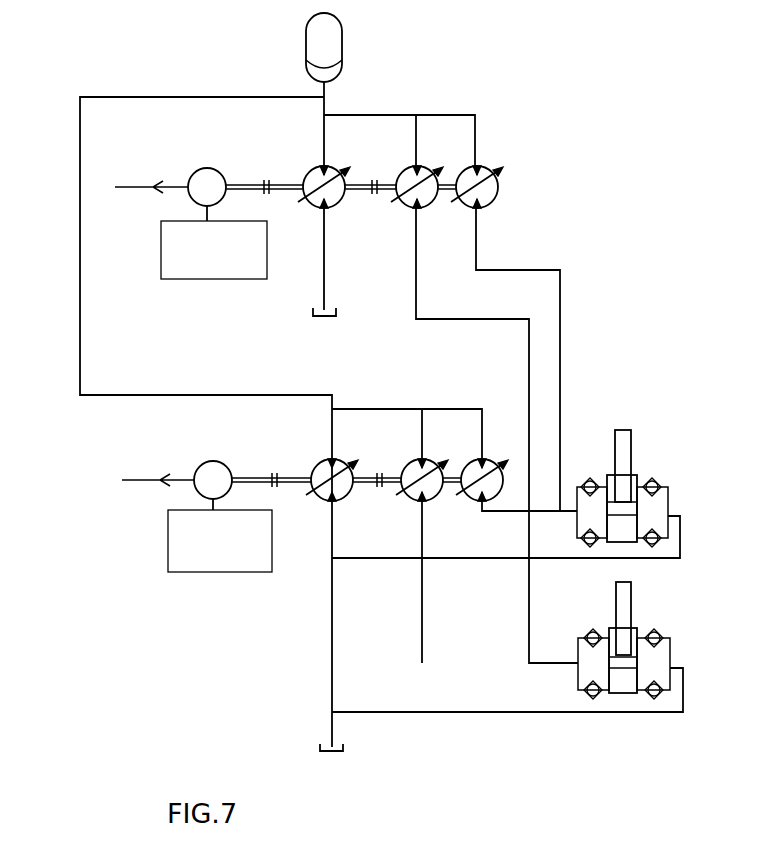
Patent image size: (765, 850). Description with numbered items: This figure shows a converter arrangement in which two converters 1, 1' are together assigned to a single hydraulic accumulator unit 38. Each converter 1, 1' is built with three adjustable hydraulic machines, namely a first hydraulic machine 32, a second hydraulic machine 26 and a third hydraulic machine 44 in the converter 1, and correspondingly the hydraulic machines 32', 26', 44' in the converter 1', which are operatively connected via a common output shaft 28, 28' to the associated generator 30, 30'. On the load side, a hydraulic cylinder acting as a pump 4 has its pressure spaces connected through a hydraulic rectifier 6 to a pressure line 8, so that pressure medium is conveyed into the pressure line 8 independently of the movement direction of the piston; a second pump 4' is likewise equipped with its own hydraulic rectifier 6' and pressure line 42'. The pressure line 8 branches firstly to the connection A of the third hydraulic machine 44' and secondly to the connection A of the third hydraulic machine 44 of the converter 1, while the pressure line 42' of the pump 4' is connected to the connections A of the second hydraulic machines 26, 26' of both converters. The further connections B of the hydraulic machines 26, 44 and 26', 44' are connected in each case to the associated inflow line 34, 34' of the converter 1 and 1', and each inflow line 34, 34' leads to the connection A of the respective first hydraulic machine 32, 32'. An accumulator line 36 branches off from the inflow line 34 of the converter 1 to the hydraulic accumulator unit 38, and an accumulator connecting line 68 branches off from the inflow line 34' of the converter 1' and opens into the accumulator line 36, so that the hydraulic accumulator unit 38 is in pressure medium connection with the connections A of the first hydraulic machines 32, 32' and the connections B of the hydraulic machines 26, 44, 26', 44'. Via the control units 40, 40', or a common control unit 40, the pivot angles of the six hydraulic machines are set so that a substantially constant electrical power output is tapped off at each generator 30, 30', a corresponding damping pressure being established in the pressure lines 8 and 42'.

The converter 1 is at (543, 148).
The converter 1' is at (568, 417).
The pump 4 is at (642, 466).
The pump 4' is at (654, 618).
The hydraulic rectifier 6 is at (640, 500).
The hydraulic rectifier 6' is at (648, 661).
The pressure line 8 is at (545, 514).
The second hydraulic machine 26 is at (469, 407).
The second hydraulic machine 26' is at (410, 553).
The output shaft 28 is at (370, 159).
The output shaft 28' is at (377, 458).
The generator 30 is at (209, 165).
The generator 30' is at (216, 460).
The first hydraulic machine 32 is at (318, 234).
The first hydraulic machine 32' is at (319, 496).
The inflow line 34 is at (399, 117).
The inflow line 34' is at (407, 413).
The accumulator line 36 is at (327, 100).
The hydraulic accumulator unit 38 is at (333, 28).
The control unit 40 is at (197, 272).
The control unit 40' is at (220, 566).
The hydraulic line 42' is at (507, 689).
The third hydraulic machine 44 is at (499, 331).
The third hydraulic machine 44' is at (510, 497).
The accumulator connecting line 68 is at (80, 292).